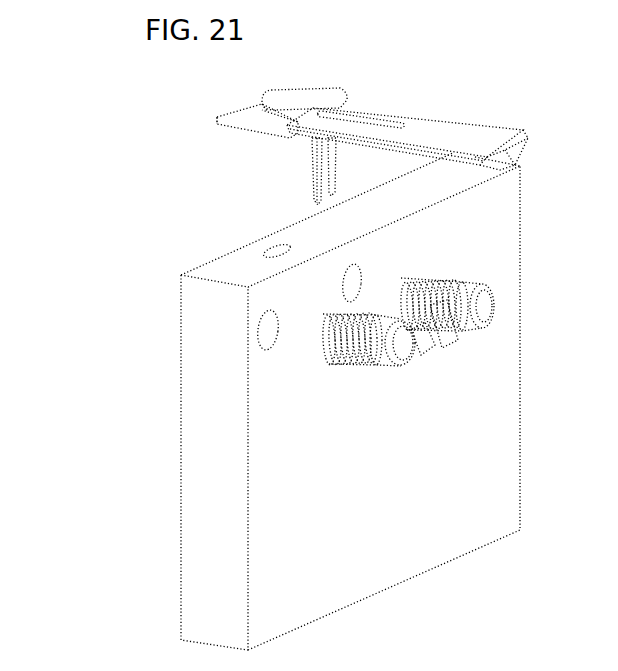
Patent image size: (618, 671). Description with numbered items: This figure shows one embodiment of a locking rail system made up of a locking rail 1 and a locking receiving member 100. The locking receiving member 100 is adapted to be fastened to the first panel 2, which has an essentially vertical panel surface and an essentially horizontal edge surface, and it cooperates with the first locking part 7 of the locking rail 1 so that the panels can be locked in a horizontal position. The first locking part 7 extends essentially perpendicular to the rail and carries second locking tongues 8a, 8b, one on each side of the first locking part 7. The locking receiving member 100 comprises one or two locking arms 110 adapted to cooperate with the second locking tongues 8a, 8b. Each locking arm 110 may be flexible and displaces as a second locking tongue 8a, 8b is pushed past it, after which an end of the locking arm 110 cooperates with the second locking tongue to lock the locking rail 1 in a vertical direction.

The locking rail 1 is at (453, 114).
The first panel 2 is at (392, 472).
The first locking part 7 is at (320, 160).
The second locking tongue 8a is at (320, 195).
The second locking tongue 8b is at (332, 194).
The locking receiving member 100 is at (430, 315).
The locking arm 110 is at (418, 335).